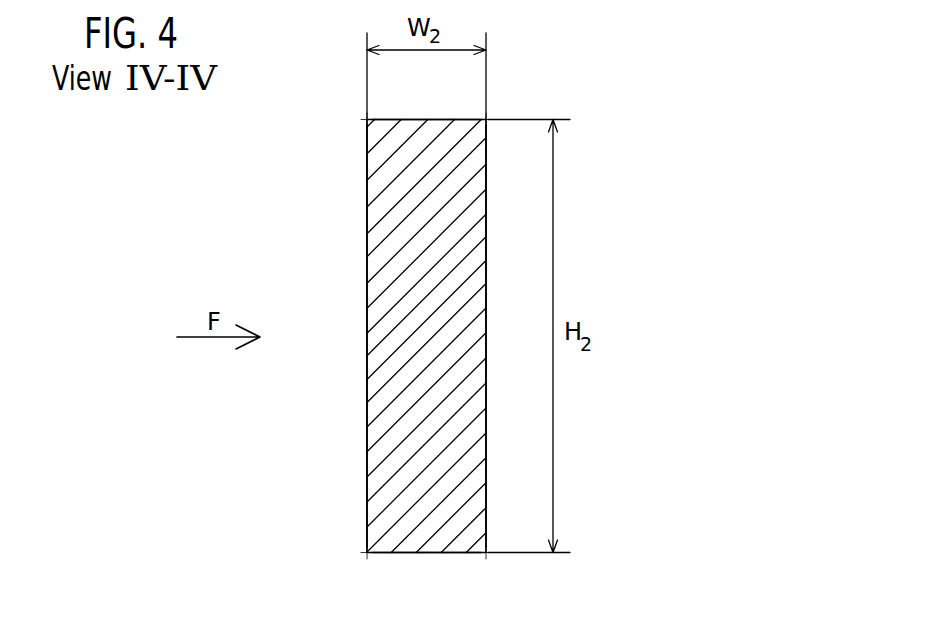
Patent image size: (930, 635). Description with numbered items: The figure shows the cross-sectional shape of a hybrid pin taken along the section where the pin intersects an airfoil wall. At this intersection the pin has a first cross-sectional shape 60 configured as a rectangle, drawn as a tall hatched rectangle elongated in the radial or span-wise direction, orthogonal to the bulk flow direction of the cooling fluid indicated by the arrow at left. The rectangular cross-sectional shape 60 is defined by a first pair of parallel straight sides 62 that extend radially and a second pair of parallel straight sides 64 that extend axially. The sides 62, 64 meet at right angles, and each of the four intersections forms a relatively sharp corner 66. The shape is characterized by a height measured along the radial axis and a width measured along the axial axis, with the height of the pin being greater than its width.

The first cross-sectional shape 60 is at (543, 63).
The first pair of parallel straight sides 62 is at (367, 265).
The second pair of parallel straight sides 64 is at (413, 119).
The corners 66 is at (363, 100).